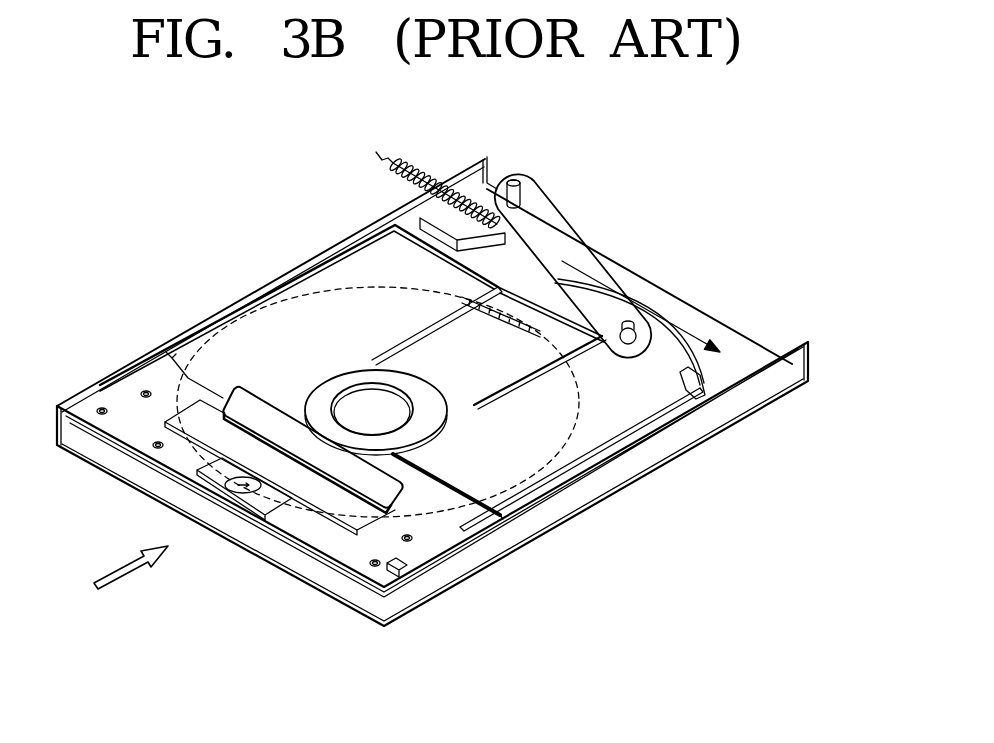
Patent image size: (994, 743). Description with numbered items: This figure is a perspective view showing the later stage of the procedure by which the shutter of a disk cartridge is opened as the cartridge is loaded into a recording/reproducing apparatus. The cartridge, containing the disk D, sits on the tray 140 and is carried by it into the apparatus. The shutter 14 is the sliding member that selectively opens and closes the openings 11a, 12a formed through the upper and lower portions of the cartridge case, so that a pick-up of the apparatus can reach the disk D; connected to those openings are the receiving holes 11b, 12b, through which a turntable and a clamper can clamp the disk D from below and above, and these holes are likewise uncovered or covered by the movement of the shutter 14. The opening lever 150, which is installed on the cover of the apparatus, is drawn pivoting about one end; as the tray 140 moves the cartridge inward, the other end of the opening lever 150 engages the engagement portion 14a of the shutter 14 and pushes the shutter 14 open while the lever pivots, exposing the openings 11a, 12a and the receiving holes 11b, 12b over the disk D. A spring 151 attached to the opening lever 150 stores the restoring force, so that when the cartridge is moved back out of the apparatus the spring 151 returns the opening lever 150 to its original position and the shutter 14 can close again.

The tray 140 is at (582, 498).
The shutter 14 is at (505, 484).
The engagement portion 14a is at (713, 375).
The opening lever 150 is at (537, 207).
The spring 151 is at (423, 192).
The opening 11a is at (577, 301).
The opening 12a is at (617, 272).
The receiving hole 11b is at (480, 525).
The receiving hole 12b is at (410, 427).
The disk D is at (321, 291).